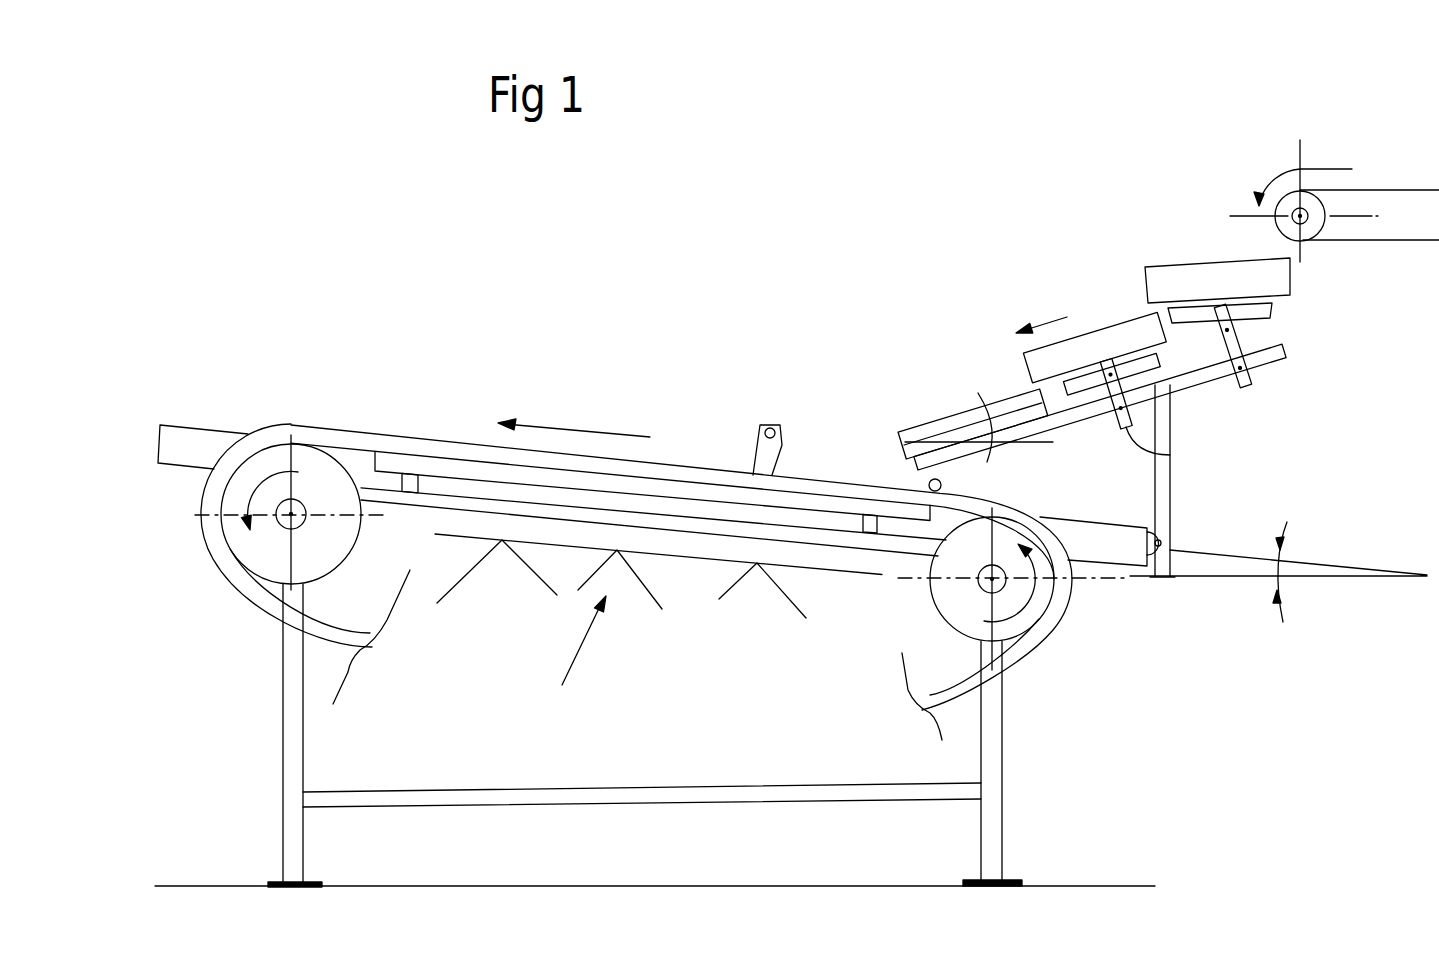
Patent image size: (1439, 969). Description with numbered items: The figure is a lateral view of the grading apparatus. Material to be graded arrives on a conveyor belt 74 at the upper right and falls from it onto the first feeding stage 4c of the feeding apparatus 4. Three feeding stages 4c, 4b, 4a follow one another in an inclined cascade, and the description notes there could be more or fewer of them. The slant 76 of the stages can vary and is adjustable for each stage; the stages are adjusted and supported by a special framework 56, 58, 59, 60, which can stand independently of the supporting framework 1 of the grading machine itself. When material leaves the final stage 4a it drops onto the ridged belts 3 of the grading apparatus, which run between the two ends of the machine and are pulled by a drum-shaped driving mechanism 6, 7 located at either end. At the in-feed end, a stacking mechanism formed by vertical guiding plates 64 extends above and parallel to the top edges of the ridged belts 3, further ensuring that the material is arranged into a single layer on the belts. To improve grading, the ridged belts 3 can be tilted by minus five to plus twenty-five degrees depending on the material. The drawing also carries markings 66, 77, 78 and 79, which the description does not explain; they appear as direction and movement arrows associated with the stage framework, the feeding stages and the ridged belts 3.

The supporting framework 1 is at (628, 790).
The ridged belts 3 is at (350, 432).
The feeding apparatus 4 is at (1161, 313).
The feeding stage 4a is at (967, 420).
The feeding stage 4b is at (1098, 330).
The first feeding stage 4c is at (1185, 268).
The drum-shaped driving mechanism 6 is at (362, 528).
The drum-shaped driving mechanism 7 is at (930, 590).
The framework 56 is at (1287, 350).
The framework 58 is at (1172, 523).
The framework 59 is at (1172, 457).
The framework 60 is at (1245, 385).
The vertical guiding plates 64 is at (823, 455).
The swivel direction 66 is at (1258, 557).
The conveyor belt 74 is at (1358, 189).
The slant 76 is at (990, 415).
The direction of movement 77 is at (1045, 317).
The direction arrow 78 is at (580, 661).
The transport direction 79 is at (580, 428).